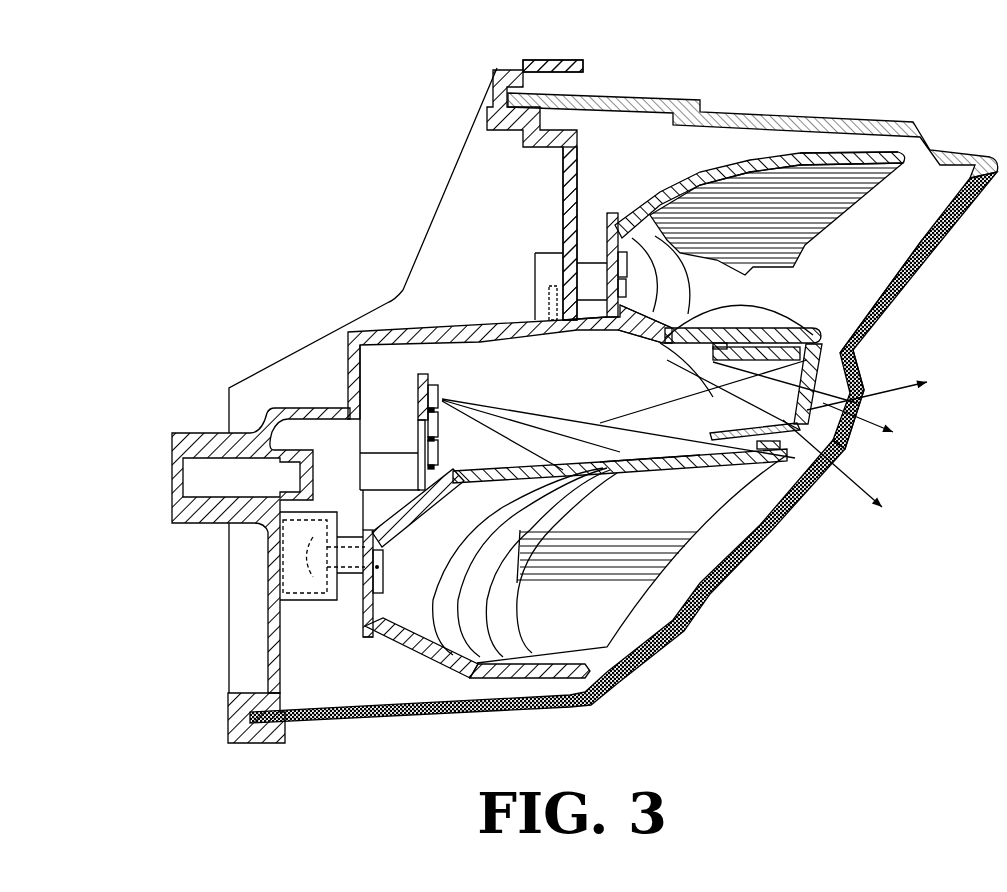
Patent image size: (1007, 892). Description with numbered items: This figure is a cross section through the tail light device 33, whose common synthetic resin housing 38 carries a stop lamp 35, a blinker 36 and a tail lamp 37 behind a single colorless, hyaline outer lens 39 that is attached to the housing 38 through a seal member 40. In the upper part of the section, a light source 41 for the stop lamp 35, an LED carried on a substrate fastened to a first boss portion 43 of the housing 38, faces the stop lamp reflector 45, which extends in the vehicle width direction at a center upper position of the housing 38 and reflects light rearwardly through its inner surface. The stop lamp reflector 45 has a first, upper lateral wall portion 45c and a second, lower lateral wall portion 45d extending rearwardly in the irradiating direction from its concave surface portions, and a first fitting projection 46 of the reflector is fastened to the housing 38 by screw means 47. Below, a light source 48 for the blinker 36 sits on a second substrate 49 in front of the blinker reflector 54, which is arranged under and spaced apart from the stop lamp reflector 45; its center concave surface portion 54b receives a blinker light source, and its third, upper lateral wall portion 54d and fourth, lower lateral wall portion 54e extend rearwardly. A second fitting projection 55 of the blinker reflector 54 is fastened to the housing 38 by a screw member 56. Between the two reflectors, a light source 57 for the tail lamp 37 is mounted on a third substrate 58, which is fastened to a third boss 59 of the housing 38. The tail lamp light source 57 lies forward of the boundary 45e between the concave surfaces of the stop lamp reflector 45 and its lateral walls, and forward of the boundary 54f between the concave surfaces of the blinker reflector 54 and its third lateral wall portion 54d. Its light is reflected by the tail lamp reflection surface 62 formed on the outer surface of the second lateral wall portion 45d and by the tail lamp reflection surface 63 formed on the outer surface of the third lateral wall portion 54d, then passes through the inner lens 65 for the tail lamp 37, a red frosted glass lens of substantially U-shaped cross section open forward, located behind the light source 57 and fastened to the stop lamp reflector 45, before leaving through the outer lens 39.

The tail light device 33 is at (924, 128).
The stop lamp 35 is at (914, 283).
The blinker 36 is at (653, 657).
The tail lamp 37 is at (867, 390).
The housing 38 is at (403, 290).
The outer lens 39 is at (890, 302).
The seal member 40 is at (549, 86).
The light source for the stop lamp 41 is at (625, 264).
The first boss portion 43 is at (591, 262).
The stop lamp reflector 45 is at (782, 148).
The first lateral wall portion 45c is at (858, 152).
The second lateral wall portion 45d is at (760, 328).
The boundary 45e is at (658, 365).
The first fitting projection 46 is at (587, 318).
The screw means 47 is at (549, 300).
The light source for the blinker 48 is at (382, 583).
The second substrate 49 is at (363, 600).
The blinker reflector 54 is at (553, 455).
The concave surface portion 54b is at (390, 647).
The third lateral wall portion 54d is at (587, 465).
The fourth lateral wall portion 54e is at (517, 672).
The boundary 54f is at (497, 463).
The second fitting projection 55 is at (352, 535).
The screw member 56 is at (303, 560).
The light source for the tail lamp 57 is at (440, 440).
The third substrate 58 is at (423, 373).
The third boss 59 is at (390, 460).
The tail lamp reflection surface 62 is at (684, 352).
The tail lamp reflection surface 63 is at (660, 457).
The inner lens for the tail lamp 65 is at (856, 405).